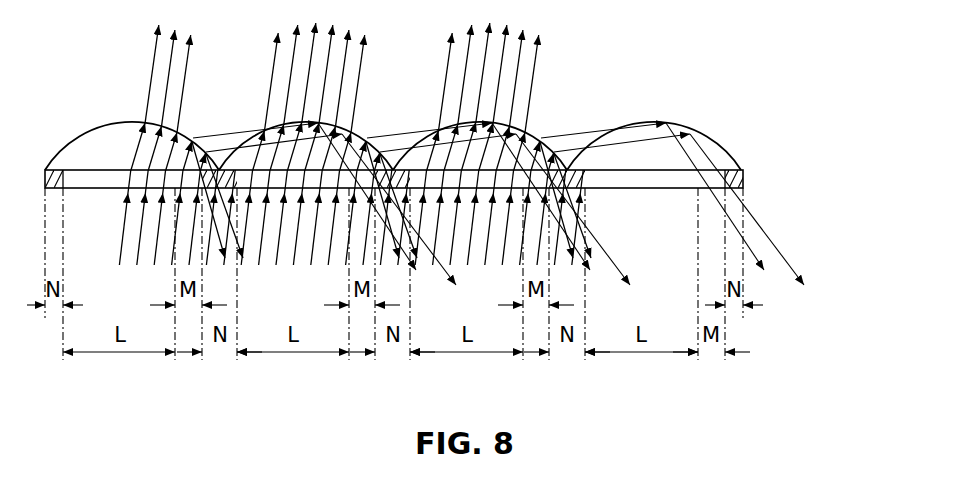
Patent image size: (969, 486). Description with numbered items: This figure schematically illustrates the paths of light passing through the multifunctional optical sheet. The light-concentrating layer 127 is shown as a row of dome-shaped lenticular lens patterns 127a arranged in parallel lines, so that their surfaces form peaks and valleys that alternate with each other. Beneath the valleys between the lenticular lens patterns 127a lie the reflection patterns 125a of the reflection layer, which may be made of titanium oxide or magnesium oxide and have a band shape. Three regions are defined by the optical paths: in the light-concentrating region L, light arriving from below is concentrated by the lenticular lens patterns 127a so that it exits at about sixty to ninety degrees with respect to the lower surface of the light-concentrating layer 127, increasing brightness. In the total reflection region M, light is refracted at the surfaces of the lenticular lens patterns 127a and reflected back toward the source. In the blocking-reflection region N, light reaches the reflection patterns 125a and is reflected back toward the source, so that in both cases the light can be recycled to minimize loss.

The light-concentrating layer 127 is at (488, 120).
The lenticular lens patterns 127a is at (605, 134).
The reflection patterns 125a is at (598, 181).